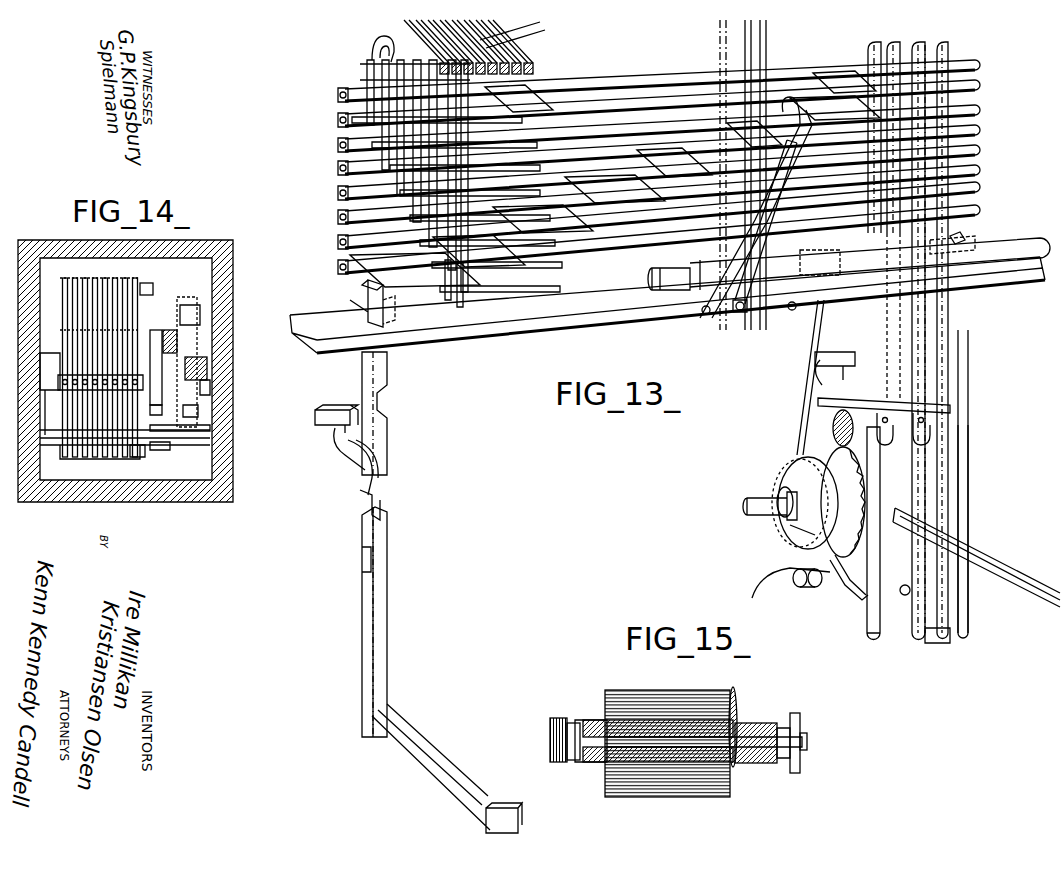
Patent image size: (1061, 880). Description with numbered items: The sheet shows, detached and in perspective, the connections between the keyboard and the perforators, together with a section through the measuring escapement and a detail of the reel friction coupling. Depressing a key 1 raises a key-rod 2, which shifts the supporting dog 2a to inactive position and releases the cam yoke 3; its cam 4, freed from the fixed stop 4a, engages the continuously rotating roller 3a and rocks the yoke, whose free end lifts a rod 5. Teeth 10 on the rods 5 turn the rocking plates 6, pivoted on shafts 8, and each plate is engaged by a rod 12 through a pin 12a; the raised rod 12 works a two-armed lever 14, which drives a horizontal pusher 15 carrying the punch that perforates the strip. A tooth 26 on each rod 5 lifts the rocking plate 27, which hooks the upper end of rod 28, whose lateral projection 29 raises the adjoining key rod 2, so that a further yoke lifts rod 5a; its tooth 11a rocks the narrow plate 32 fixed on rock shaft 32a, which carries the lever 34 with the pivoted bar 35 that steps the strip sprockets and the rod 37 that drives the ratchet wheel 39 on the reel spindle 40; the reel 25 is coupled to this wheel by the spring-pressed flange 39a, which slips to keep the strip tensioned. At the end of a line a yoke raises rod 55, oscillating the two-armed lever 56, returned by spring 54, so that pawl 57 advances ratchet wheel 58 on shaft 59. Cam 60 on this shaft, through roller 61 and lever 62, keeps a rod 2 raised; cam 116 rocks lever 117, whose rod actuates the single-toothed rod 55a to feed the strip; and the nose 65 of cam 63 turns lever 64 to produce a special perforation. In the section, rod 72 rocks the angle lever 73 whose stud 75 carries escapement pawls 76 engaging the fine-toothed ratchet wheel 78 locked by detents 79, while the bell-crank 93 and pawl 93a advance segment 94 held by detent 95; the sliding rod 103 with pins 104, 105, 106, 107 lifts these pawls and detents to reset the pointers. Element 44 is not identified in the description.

In FIG. 13, the key 1 is at (495, 805).
In FIG. 13, the key-rod 2 is at (960, 455).
In FIG. 13, the supporting dog 2a is at (930, 425).
In FIG. 13, the cam yoke 3 is at (945, 408).
In FIG. 13, the continuously rotating roller 3a is at (832, 427).
In FIG. 13, the cam 4 is at (846, 356).
In FIG. 13, the fixed stop 4a is at (815, 360).
In FIG. 13, the rod 5 is at (870, 55).
In FIG. 13, the rod 5a is at (938, 150).
In FIG. 13, the rocking plate 6 is at (365, 112).
In FIG. 13, the shaft 8 is at (365, 190).
In FIG. 13, the tooth 10 is at (366, 305).
In FIG. 13, the tooth 11a is at (955, 238).
In FIG. 13, the rod 12 is at (372, 82).
In FIG. 13, the projecting pin 12a is at (400, 175).
In FIG. 13, the two-armed lever 14 is at (372, 50).
In FIG. 13, the horizontal pusher 15 is at (495, 50).
In FIG. 13, the tooth 26 is at (395, 312).
In FIG. 13, the rocking plate 27 is at (578, 318).
In FIG. 13, the rod 28 is at (950, 342).
In FIG. 13, the lateral projection 29 is at (976, 585).
In FIG. 13, the rocking plate 32 is at (985, 245).
In FIG. 13, the rock shaft 32a is at (652, 275).
In FIG. 13, the lever 34 is at (700, 305).
In FIG. 13, the bar 35 is at (738, 315).
In FIG. 13, the rod 37 is at (748, 318).
In FIG. 13, the rods 44 is at (722, 78).
In FIG. 13, the spring 54 is at (835, 278).
In FIG. 13, the rod 55 is at (892, 330).
In FIG. 13, the rod 55a is at (918, 125).
In FIG. 13, the two-armed lever 56 is at (790, 310).
In FIG. 13, the pawl 57 is at (812, 372).
In FIG. 13, the ratchet wheel 58 is at (805, 480).
In FIG. 13, the shaft 59 is at (748, 510).
In FIG. 13, the cam 60 is at (840, 462).
In FIG. 13, the roller 61 is at (782, 589).
In FIG. 13, the lever 62 is at (845, 585).
In FIG. 13, the cam 63 is at (800, 530).
In FIG. 13, the lever 64 is at (858, 600).
In FIG. 13, the nose 65 is at (783, 512).
In FIG. 13, the cam 116 is at (878, 485).
In FIG. 13, the lever 117 is at (900, 595).
In FIG. 14, the rod 72 is at (45, 470).
In FIG. 14, the angle lever 73 is at (62, 470).
In FIG. 14, the stud 75 is at (185, 440).
In FIG. 14, the escapement pawl 76 is at (130, 330).
In FIG. 14, the ratchet wheel 78 is at (140, 470).
In FIG. 14, the detent 79 is at (140, 452).
In FIG. 14, the bell-crank lever 93 is at (207, 365).
In FIG. 14, the pawl 93a is at (210, 388).
In FIG. 14, the ratchet-toothed segment 94 is at (198, 420).
In FIG. 14, the detent 95 is at (195, 330).
In FIG. 14, the sliding rod 103 is at (178, 305).
In FIG. 14, the pin 104 is at (170, 448).
In FIG. 14, the pin 105 is at (160, 335).
In FIG. 14, the pin 106 is at (148, 340).
In FIG. 14, the pin 107 is at (150, 410).
In FIG. 15, the reel 25 is at (615, 702).
In FIG. 15, the ratchet wheel 39 is at (800, 728).
In FIG. 15, the spring-pressed flange 39a is at (740, 712).
In FIG. 15, the spindle 40 is at (808, 742).